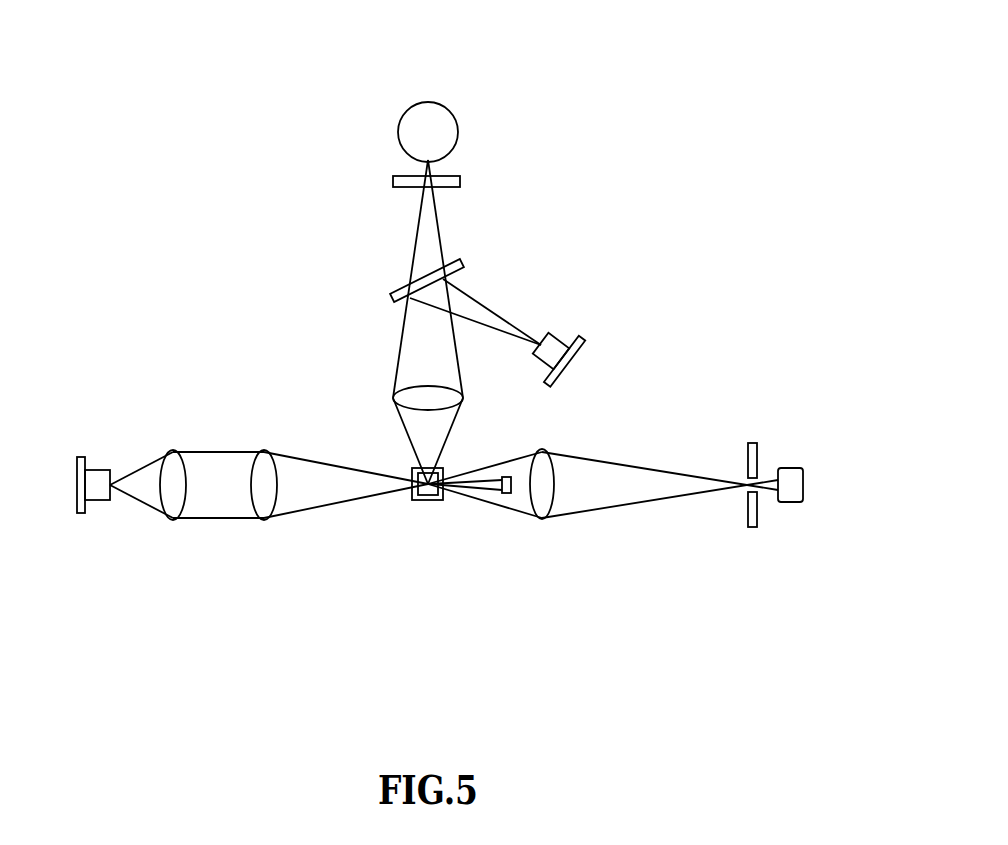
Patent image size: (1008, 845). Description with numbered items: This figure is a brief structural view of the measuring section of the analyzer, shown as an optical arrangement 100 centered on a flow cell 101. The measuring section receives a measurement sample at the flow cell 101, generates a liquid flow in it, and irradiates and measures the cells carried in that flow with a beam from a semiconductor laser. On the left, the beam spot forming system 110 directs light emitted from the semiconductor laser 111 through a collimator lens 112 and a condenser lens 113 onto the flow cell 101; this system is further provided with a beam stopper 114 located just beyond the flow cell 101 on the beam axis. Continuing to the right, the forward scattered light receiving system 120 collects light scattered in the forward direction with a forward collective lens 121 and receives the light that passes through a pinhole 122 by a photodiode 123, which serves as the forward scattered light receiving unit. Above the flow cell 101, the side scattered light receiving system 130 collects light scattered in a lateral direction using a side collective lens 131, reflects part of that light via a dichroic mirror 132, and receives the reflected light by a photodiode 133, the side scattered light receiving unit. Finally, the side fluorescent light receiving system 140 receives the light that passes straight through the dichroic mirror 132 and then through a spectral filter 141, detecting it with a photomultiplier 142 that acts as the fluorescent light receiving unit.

The sample 100 is at (473, 523).
The flow cell 101 is at (420, 502).
The beam spot forming system 110 is at (210, 545).
The semiconductor laser 111 is at (100, 468).
The collimator lens 112 is at (170, 450).
The condenser lens 113 is at (263, 450).
The beam stopper 114 is at (505, 477).
The forward scattered light receiving system 120 is at (657, 533).
The forward collective lens 121 is at (545, 518).
The pinhole 122 is at (752, 443).
The photodiode (forward scattered light receiving unit) 123 is at (803, 480).
The side scattered light receiving system 130 is at (633, 318).
The side collective lens 131 is at (395, 397).
The dichroic mirror 132 is at (397, 291).
The photodiode (side scattered light receiving unit) 133 is at (568, 372).
The side fluorescent light receiving system 140 is at (482, 93).
The spectral filter 141 is at (460, 182).
The photomultiplier (fluorescent light receiving unit) 142 is at (412, 104).